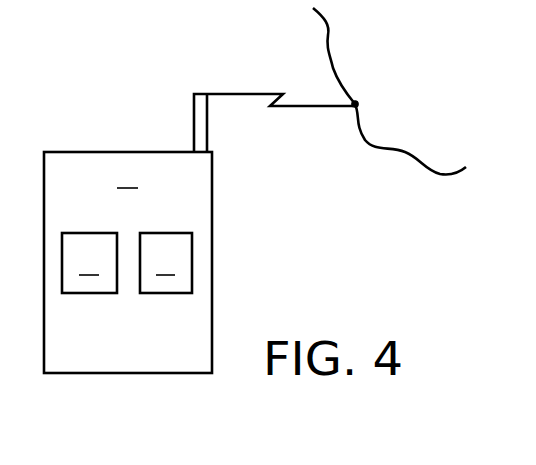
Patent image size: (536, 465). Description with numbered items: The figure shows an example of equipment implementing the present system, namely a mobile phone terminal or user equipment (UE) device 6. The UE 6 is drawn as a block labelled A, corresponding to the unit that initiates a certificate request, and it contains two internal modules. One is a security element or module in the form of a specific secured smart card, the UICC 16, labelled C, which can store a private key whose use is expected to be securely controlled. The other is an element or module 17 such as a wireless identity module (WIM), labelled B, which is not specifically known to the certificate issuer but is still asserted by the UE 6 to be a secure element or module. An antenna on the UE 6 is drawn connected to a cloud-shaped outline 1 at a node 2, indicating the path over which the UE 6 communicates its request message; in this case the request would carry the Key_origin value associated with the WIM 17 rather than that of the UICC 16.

The communication network 1 is at (412, 58).
The network node / access point 2 is at (358, 104).
The user equipment device 6 is at (72, 152).
The UICC 16 is at (93, 293).
The wireless identity module 17 is at (192, 262).